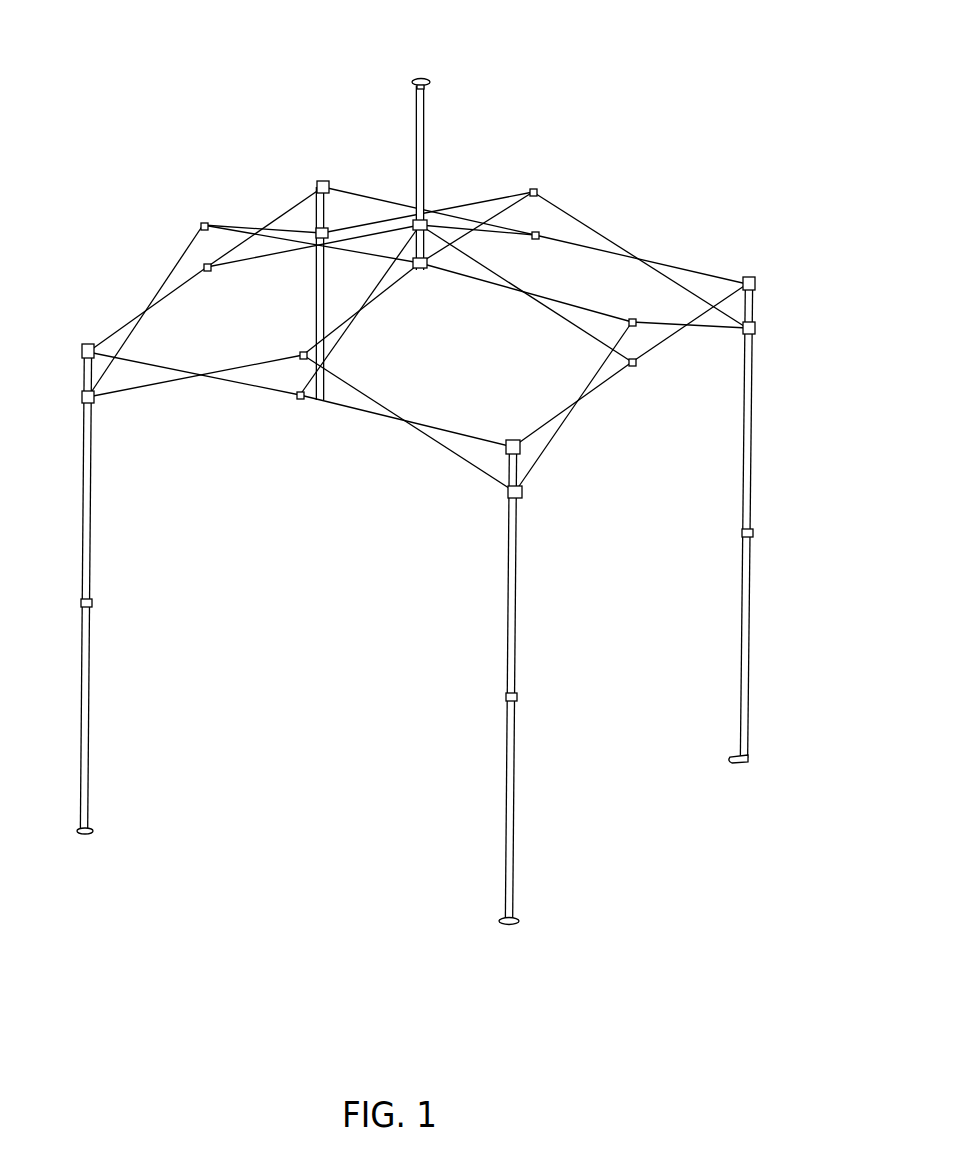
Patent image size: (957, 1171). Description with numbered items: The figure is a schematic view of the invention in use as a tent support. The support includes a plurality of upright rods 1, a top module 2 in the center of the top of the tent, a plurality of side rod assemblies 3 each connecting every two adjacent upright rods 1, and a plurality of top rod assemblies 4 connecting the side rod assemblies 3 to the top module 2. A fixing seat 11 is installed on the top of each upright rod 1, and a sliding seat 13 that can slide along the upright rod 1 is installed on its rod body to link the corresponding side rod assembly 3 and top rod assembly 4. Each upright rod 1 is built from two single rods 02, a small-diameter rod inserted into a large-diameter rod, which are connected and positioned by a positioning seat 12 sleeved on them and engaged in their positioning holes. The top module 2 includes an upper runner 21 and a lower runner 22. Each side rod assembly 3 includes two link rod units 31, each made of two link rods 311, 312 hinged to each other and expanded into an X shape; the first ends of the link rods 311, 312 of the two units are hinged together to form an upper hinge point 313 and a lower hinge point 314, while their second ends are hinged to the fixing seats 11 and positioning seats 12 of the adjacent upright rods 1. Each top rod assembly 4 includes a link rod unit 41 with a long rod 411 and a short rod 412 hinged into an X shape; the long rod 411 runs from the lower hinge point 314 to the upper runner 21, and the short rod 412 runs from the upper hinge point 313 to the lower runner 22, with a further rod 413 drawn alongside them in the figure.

The upright rod 1 is at (88, 494).
The single rod 02 is at (513, 637).
The fixing seat 11 is at (93, 343).
The positioning seat 12 is at (92, 601).
The sliding seat 13 is at (520, 491).
The top module 2 is at (427, 98).
The upper runner 21 is at (411, 260).
The lower runner 22 is at (412, 222).
The side rod assembly 3 is at (232, 385).
The link rod unit 31 is at (407, 462).
The link rod 311 is at (462, 463).
The link rod 312 is at (372, 418).
The upper hinge point 313 is at (305, 356).
The lower hinge point 314 is at (300, 402).
The top rod assembly 4 is at (462, 312).
The link rod unit 41 is at (517, 318).
The long rod 411 is at (347, 330).
The short rod 412 is at (410, 282).
The support strut 413 is at (373, 308).